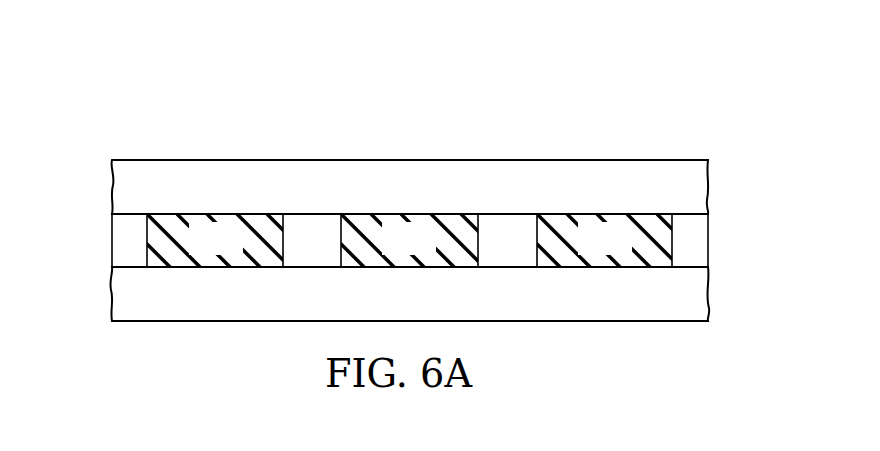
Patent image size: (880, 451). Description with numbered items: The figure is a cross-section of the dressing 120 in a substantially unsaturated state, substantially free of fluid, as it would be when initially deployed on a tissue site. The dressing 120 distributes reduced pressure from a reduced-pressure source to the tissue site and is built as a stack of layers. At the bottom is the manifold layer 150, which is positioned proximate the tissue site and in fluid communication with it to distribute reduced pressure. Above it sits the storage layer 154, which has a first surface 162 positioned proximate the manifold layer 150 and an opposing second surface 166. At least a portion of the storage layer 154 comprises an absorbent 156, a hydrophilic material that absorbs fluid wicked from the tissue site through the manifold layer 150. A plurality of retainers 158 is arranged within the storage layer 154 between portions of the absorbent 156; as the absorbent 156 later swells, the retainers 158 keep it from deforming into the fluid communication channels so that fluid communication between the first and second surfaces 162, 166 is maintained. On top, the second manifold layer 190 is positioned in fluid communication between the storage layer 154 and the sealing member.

The dressing 120 is at (188, 80).
The manifold layer 150 is at (700, 295).
The storage layer 154 is at (702, 248).
The absorbent 156 is at (240, 252).
The retainers 158 is at (310, 222).
The first surface 162 is at (163, 267).
The second surface 166 is at (163, 213).
The second manifold layer 190 is at (118, 185).